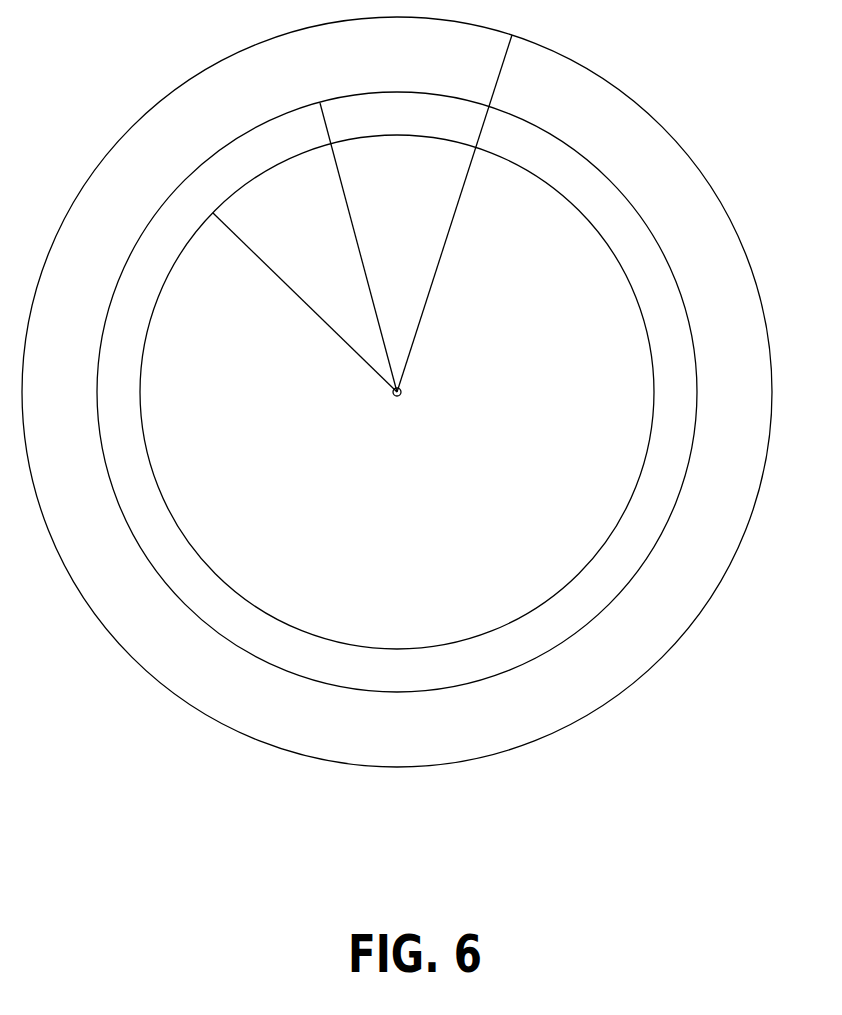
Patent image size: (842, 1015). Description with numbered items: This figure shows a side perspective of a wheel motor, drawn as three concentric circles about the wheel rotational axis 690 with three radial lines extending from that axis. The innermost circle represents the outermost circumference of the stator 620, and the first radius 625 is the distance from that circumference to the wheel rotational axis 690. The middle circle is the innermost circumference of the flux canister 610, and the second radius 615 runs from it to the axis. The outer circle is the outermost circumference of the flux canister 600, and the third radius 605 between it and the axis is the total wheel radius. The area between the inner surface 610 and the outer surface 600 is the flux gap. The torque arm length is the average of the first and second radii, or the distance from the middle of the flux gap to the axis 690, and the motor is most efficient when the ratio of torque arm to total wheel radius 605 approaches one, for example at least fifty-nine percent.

The outermost circumference of the flux canister 600 is at (635, 100).
The third radius 605 is at (447, 240).
The innermost circumference of the flux canister 610 is at (638, 573).
The second radius 615 is at (362, 263).
The stator 620 is at (498, 632).
The first radius 625 is at (271, 270).
The wheel rotational axis 690 is at (401, 393).